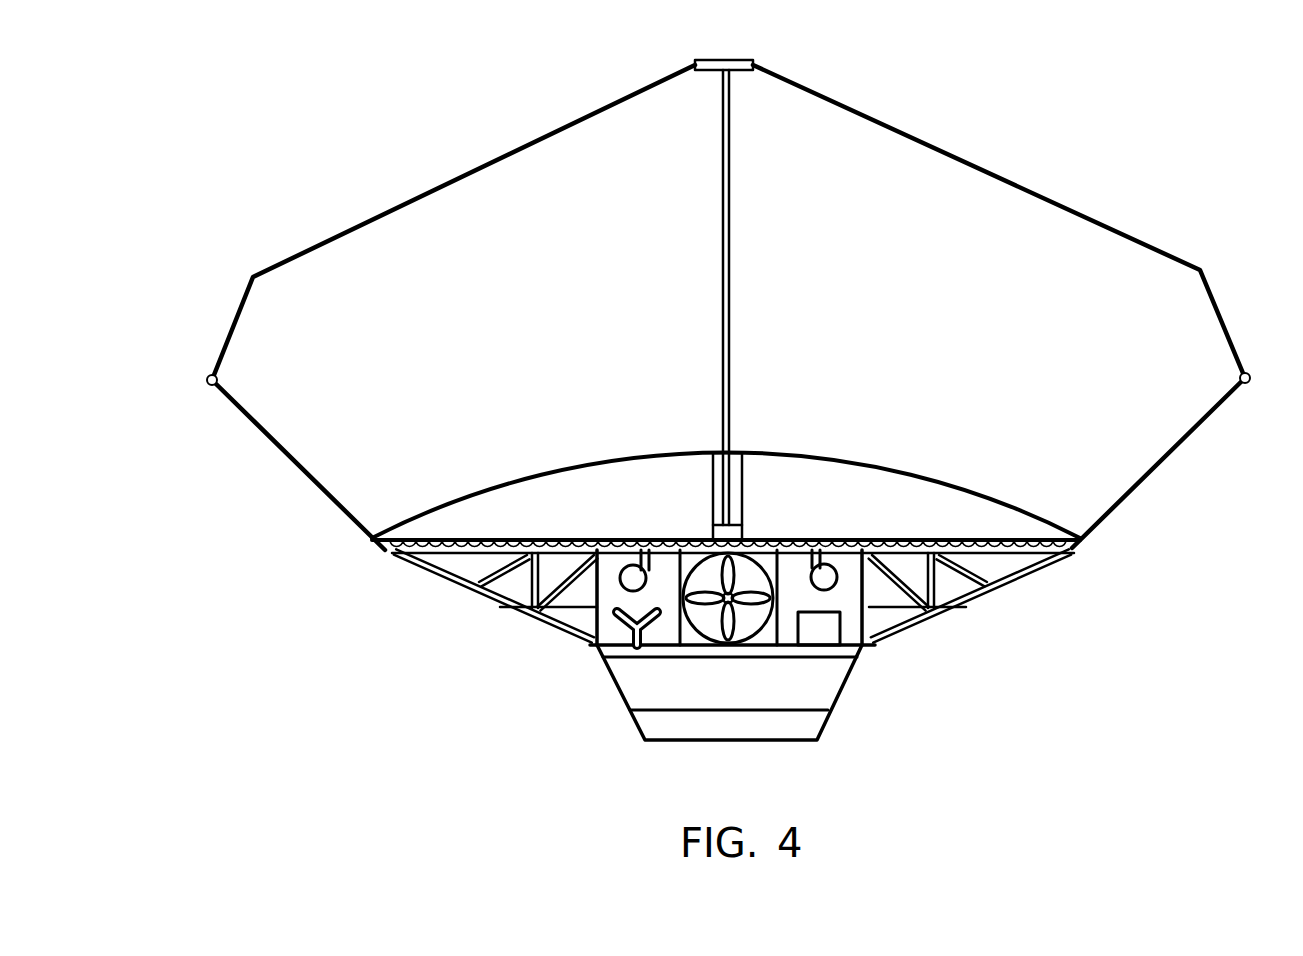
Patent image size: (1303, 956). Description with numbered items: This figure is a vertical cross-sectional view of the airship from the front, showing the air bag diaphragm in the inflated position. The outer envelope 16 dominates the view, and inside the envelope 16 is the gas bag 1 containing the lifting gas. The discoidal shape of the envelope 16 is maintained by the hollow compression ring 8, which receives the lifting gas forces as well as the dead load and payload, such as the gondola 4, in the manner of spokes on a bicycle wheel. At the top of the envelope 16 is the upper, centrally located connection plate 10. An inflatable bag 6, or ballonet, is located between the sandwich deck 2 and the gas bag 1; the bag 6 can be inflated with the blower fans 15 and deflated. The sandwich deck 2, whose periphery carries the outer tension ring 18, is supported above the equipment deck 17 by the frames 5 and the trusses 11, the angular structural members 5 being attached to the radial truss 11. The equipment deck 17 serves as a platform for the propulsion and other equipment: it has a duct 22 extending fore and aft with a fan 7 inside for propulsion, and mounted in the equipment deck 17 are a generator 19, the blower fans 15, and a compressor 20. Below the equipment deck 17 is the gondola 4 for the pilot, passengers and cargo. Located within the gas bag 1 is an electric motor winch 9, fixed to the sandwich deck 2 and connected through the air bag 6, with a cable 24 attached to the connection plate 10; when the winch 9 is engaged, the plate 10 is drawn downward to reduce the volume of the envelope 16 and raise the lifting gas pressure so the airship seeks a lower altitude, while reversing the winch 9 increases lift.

The gas bag 1 is at (843, 145).
The sandwich deck 2 is at (952, 538).
The gondola 4 is at (780, 742).
The frames 5 is at (930, 570).
The inflatable bag 6 is at (975, 483).
The fan 7 is at (700, 604).
The compression ring 8 is at (1243, 372).
The electric motor winch 9 is at (713, 525).
The connection plate 10 is at (720, 67).
The radial truss 11 is at (520, 606).
The blower fans 15 is at (843, 577).
The envelope 16 is at (980, 167).
The equipment deck 17 is at (681, 646).
The outer tension ring 18 is at (400, 553).
The generator 19 is at (827, 647).
The compressor 20 is at (621, 619).
The duct 22 is at (695, 647).
The cable 24 is at (722, 222).